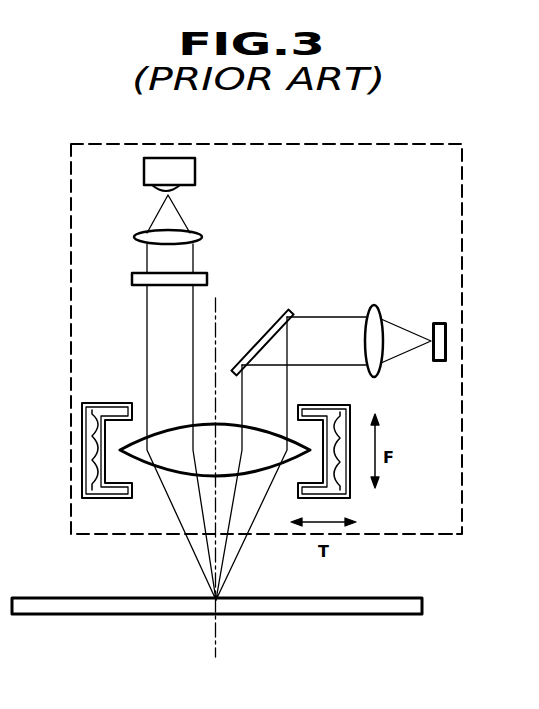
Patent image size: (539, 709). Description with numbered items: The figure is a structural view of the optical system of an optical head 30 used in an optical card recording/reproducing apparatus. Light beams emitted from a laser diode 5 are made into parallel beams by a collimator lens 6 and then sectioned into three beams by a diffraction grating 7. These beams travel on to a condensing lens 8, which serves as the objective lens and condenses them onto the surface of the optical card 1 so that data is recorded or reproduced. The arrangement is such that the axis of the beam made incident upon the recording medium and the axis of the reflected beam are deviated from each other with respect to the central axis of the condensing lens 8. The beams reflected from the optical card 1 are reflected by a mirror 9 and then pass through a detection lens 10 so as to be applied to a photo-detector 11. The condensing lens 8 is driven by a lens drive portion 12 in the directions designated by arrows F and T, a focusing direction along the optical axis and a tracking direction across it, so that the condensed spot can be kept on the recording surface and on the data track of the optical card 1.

The optical card 1 is at (327, 615).
The laser diode 5 is at (194, 172).
The collimator lens 6 is at (202, 237).
The diffraction grating 7 is at (207, 278).
The condensing lens 8 is at (177, 437).
The mirror 9 is at (266, 328).
The detection lens 10 is at (400, 322).
The photo-detector 11 is at (440, 363).
The lens drive portion 12 is at (82, 470).
The optical head 30 is at (457, 144).